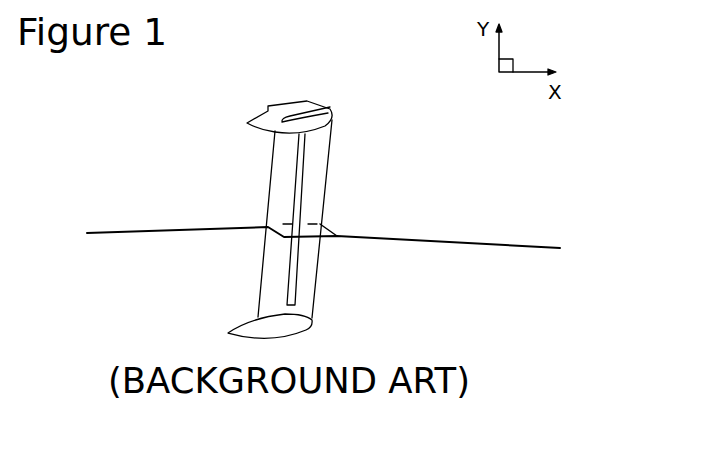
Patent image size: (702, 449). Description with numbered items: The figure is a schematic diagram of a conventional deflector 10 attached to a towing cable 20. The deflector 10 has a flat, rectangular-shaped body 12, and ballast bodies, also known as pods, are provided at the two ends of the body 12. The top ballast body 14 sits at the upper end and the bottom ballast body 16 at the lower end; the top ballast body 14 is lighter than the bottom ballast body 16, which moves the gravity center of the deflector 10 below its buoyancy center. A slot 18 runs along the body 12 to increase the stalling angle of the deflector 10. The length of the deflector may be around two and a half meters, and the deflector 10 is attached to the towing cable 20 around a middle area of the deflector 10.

The deflector 10 is at (327, 178).
The body 12 is at (262, 275).
The top ballast body 14 is at (309, 104).
The bottom ballast body 16 is at (307, 328).
The slot 18 is at (297, 272).
The towing cable 20 is at (465, 240).